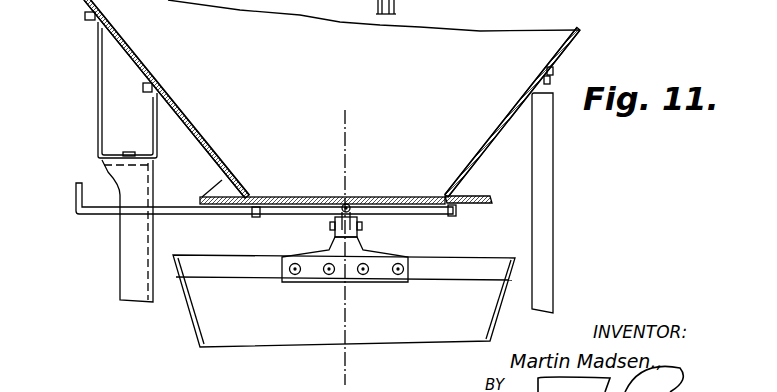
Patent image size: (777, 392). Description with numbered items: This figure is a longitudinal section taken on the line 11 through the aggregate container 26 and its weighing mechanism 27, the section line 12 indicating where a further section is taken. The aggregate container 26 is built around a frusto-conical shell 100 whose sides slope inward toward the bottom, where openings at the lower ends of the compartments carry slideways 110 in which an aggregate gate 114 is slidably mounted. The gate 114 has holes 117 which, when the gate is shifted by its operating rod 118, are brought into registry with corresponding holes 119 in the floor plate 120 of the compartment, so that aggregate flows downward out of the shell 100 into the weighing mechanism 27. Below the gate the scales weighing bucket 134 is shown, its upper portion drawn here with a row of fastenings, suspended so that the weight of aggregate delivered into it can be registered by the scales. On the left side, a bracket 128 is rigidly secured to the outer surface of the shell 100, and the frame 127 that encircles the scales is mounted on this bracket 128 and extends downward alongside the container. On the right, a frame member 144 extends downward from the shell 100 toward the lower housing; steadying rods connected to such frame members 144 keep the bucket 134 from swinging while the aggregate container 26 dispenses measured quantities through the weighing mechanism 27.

The aggregate container 26 is at (136, 27).
The frusto-conical shell 100 is at (563, 62).
The slideways 110 is at (398, 5).
The section line 11— 11 is at (295, 4).
The bracket 128 is at (97, 128).
The frame 127 is at (130, 265).
The operating rod 118 is at (183, 214).
The aggregate gate 114 is at (305, 182).
The holes 117 is at (334, 200).
The floor plate 120 is at (355, 197).
The holes 119 is at (392, 188).
The scales weighing bucket 134 is at (453, 268).
The weighing mechanism 27 is at (188, 327).
The frame member 144 is at (548, 232).
The section line 12 is at (366, 107).